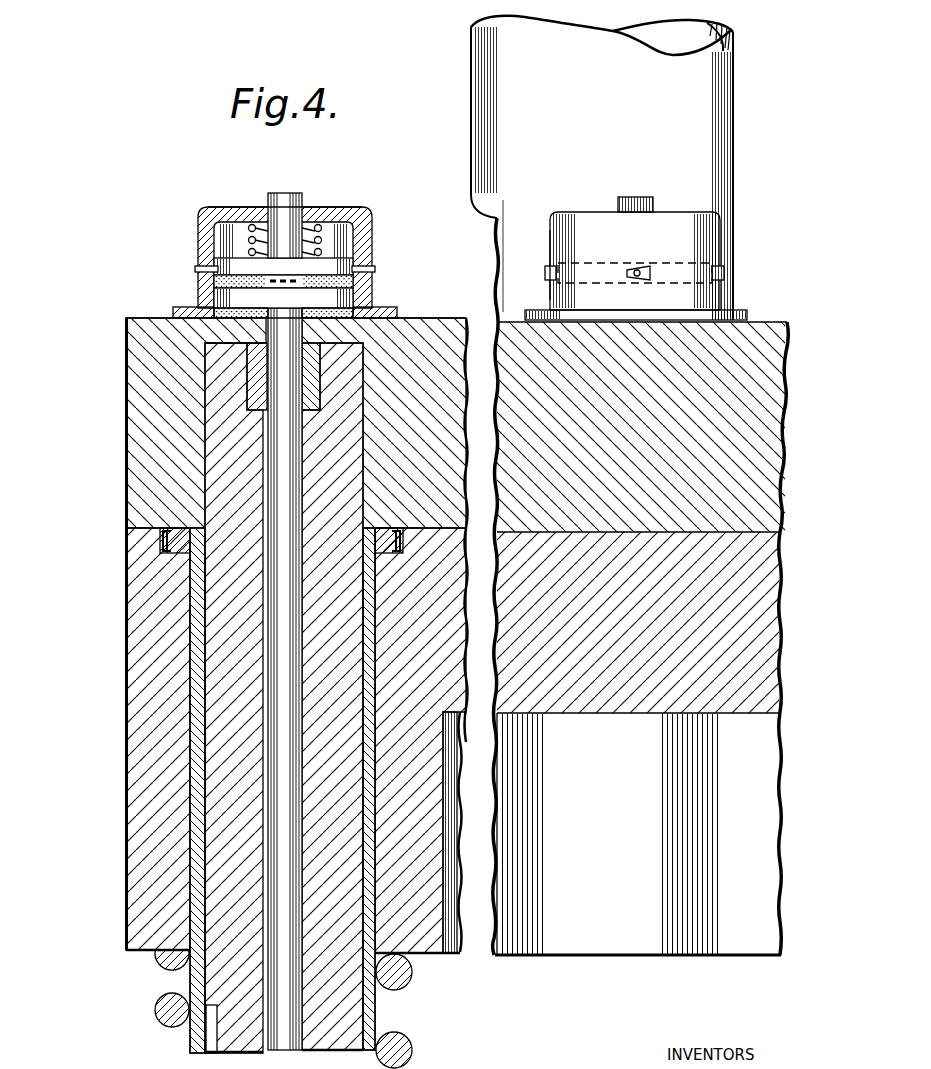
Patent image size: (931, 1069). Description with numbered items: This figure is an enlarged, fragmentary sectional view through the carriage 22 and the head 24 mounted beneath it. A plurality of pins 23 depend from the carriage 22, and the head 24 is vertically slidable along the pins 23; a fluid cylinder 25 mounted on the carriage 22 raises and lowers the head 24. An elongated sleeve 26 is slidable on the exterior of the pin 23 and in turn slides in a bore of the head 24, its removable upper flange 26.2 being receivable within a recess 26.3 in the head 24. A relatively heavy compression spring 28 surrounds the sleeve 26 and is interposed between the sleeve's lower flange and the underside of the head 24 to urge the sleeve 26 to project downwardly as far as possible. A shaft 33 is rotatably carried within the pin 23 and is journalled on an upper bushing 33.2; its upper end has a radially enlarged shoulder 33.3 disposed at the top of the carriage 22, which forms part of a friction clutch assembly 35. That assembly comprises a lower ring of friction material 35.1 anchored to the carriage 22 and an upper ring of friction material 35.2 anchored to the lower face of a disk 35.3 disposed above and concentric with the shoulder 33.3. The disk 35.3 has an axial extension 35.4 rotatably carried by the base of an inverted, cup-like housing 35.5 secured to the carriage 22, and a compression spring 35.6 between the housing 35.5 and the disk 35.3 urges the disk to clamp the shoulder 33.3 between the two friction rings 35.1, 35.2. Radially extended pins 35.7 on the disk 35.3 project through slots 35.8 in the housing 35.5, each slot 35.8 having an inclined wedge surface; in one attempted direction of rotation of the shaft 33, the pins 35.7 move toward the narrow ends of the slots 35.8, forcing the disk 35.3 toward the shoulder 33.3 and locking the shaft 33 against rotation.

The carriage 22 is at (120, 475).
The pin 23 is at (220, 882).
The head 24 is at (120, 654).
The fluid cylinder 25 is at (464, 54).
The sleeve 26 is at (195, 800).
The removable upper flange 26.2 is at (165, 565).
The recess 26.3 is at (163, 536).
The compression spring 28 is at (156, 1020).
The shaft 33 is at (283, 711).
The upper bushing 33.2 is at (247, 385).
The shoulder 33.3 is at (352, 304).
The friction clutch assembly 35 is at (186, 244).
The lower ring of friction material 35.1 is at (206, 342).
The upper ring of friction material 35.2 is at (218, 287).
The disk 35.3 is at (322, 257).
The axial extension 35.4 is at (287, 193).
The housing 35.5 is at (232, 199).
The compression spring 35.6 is at (200, 232).
The pin 35.7 is at (196, 269).
The slot 35.8 is at (358, 287).